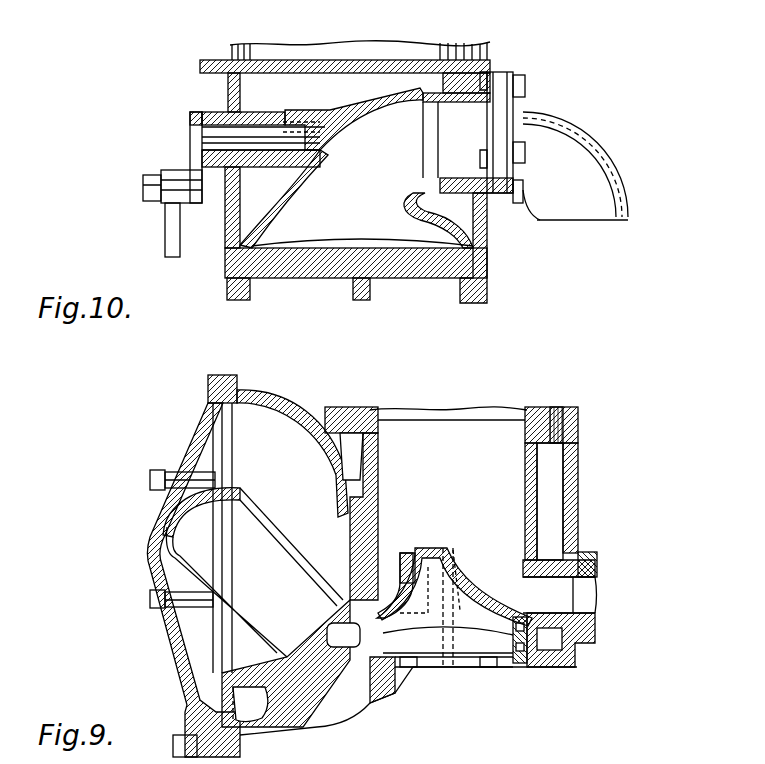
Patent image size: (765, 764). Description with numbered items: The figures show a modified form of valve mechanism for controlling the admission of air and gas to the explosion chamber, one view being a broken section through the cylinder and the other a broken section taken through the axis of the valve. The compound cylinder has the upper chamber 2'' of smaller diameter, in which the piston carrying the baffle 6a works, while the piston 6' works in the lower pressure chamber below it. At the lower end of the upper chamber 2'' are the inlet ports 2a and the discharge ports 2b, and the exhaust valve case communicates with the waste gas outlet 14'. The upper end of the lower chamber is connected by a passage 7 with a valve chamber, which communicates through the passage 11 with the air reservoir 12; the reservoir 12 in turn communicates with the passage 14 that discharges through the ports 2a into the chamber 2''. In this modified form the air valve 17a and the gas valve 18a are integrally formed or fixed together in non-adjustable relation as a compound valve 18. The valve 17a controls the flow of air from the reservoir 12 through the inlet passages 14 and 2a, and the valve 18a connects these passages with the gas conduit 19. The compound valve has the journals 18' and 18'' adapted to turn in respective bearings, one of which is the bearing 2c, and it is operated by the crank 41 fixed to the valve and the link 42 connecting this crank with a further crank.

In FIG. 10, the bearing 2c is at (257, 112).
In FIG. 10, the crank 41 is at (190, 137).
In FIG. 10, the link 42 is at (170, 240).
In FIG. 10, the journal 18' is at (387, 128).
In FIG. 10, the valve 18 is at (356, 199).
In FIG. 10, the journal 18'' is at (523, 136).
In FIG. 10, the inlet ports 2a is at (487, 210).
In FIG. 9, the inlet ports 2a is at (382, 550).
In FIG. 10, the gas conduit 19 is at (598, 210).
In FIG. 9, the air reservoir 12 is at (150, 549).
In FIG. 9, the gas valve 18a is at (225, 600).
In FIG. 9, the upper chamber 2'' is at (566, 483).
In FIG. 9, the discharge ports 2b is at (517, 580).
In FIG. 9, the waste gas outlet 14' is at (575, 613).
In FIG. 9, the air valve 17a is at (330, 518).
In FIG. 9, the passage 7 is at (300, 717).
In FIG. 9, the passage 11 is at (247, 717).
In FIG. 9, the piston 6' is at (408, 697).
In FIG. 9, the passage 14 is at (393, 568).
In FIG. 9, the baffle 6a is at (453, 547).